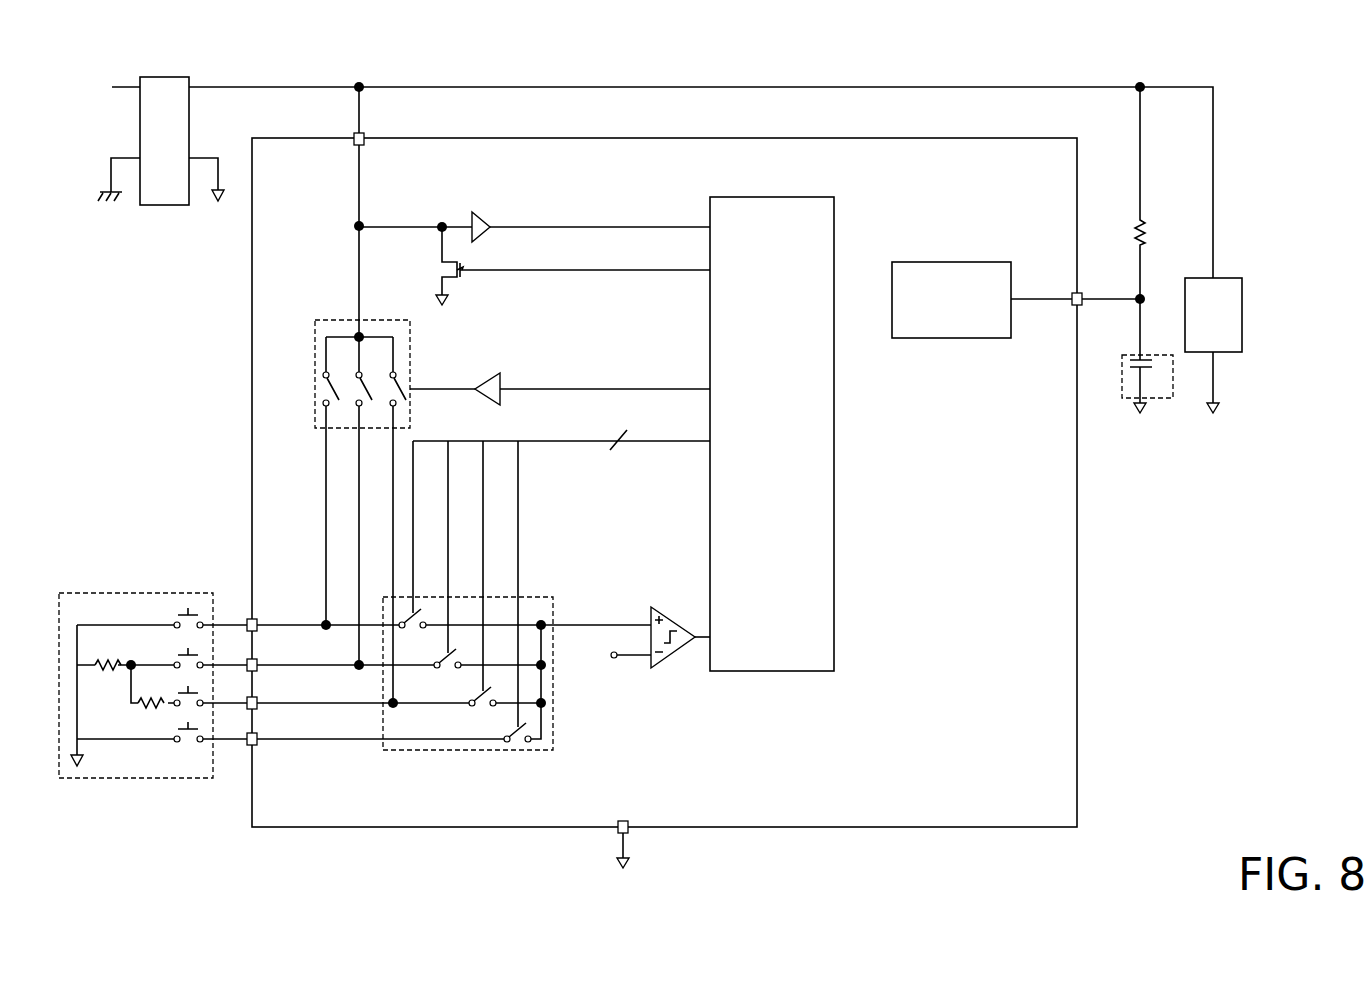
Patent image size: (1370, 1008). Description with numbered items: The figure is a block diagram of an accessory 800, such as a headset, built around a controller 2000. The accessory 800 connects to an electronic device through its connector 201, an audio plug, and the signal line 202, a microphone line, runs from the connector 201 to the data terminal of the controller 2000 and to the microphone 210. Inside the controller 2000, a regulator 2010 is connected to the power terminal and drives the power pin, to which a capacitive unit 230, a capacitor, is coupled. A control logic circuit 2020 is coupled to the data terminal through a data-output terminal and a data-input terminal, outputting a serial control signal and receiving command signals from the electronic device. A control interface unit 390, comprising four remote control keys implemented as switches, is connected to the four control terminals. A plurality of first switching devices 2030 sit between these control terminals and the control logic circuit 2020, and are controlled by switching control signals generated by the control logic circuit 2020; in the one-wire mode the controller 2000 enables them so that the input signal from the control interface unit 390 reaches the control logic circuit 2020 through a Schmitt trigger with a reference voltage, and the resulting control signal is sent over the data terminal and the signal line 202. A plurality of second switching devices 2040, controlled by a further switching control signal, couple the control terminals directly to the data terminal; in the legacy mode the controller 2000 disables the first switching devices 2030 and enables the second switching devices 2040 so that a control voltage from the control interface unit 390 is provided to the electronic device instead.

The accessory 800 is at (1369, 61).
The connector 201 is at (168, 77).
The signal line 202 is at (778, 87).
The controller 2000 is at (778, 138).
The regulator 2010 is at (958, 262).
The control logic circuit 2020 is at (778, 197).
The first switching devices 2030 is at (465, 750).
The second switching devices 2040 is at (396, 308).
The control interface unit 390 is at (149, 583).
The capacitive unit 230 is at (1165, 399).
The microphone 210 is at (1225, 353).